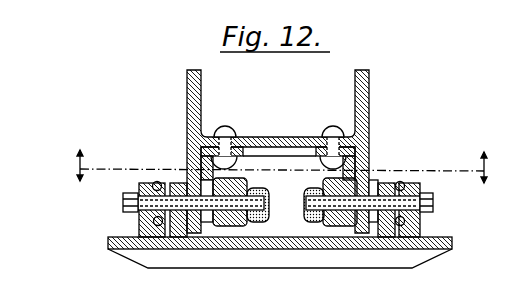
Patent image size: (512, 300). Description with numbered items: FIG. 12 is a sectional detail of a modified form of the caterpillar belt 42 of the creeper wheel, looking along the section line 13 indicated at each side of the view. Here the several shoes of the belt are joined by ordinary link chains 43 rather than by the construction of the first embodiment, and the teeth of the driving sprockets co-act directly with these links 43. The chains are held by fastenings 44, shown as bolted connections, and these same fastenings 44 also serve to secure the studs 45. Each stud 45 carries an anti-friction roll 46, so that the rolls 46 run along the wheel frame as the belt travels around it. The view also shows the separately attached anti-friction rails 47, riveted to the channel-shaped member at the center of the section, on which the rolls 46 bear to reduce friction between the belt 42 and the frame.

The section line 13- 13 is at (281, 166).
The caterpillar belt 42 is at (280, 243).
The link chains 43 is at (158, 181).
The fastenings 44 is at (140, 216).
The studs 45 is at (372, 184).
The anti-friction rolls 46 is at (343, 176).
The anti-friction rails 47 is at (333, 171).